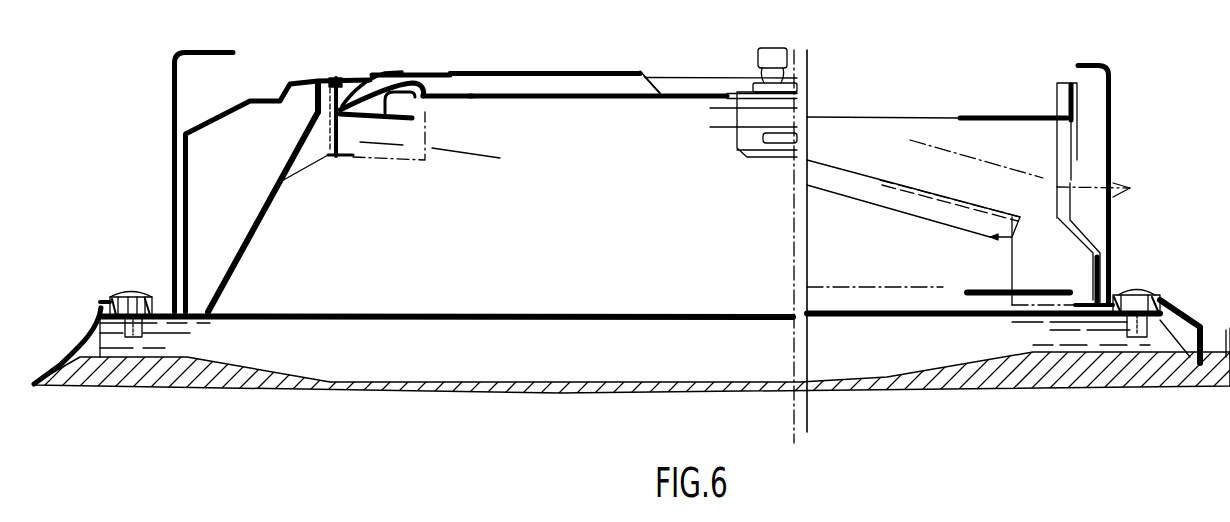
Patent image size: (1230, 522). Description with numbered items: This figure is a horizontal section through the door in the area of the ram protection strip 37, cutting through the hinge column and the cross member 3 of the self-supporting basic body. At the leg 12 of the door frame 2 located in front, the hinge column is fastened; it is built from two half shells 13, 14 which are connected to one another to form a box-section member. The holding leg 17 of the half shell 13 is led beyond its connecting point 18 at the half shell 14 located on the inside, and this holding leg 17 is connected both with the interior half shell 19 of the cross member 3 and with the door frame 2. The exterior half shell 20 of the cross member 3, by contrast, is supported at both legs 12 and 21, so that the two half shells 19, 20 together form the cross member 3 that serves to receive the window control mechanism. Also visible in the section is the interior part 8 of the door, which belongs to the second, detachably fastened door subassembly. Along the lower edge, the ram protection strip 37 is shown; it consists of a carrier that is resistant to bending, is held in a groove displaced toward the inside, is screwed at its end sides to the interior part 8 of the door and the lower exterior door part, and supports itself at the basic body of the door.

The door frame 2 is at (385, 68).
The cross member 3 is at (633, 129).
The interior part of the door 8 is at (1114, 185).
The leg of the door frame 12 is at (420, 159).
The half shell 13 is at (273, 176).
The half shell 14 is at (268, 212).
The holding leg 17 is at (372, 60).
The connecting point 18 is at (340, 91).
The interior half shell of the cross member 19 is at (584, 61).
The exterior half shell of the cross member 20 is at (447, 124).
The leg 21 is at (953, 222).
The ram protection strip 37 is at (630, 296).